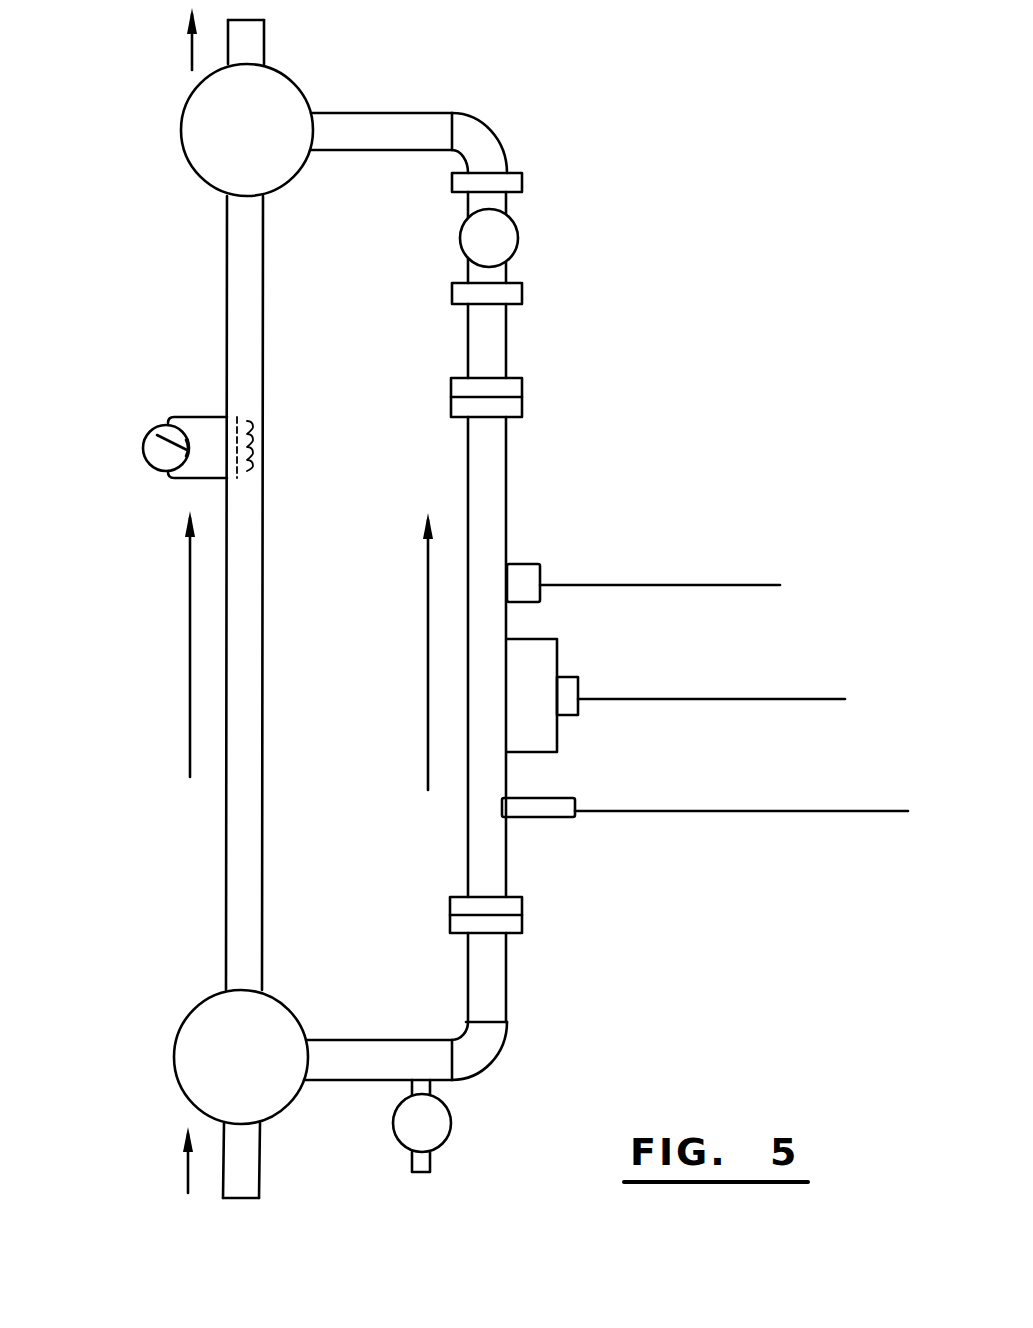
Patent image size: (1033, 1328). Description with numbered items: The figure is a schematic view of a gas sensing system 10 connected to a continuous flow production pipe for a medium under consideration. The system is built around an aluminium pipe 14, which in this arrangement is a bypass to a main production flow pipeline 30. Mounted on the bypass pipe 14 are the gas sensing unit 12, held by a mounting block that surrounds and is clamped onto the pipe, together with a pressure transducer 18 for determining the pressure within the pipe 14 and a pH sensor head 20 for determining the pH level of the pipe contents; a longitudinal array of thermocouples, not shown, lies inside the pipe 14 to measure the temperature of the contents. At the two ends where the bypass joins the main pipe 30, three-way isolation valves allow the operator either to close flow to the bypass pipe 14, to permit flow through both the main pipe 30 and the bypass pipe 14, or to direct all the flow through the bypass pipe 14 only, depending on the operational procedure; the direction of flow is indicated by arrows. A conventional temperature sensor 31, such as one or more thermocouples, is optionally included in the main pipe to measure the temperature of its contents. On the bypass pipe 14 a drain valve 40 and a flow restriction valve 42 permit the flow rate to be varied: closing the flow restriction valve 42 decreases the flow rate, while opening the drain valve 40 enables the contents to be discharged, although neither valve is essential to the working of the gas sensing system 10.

The gas sensing system 10 is at (602, 836).
The gas sensing unit 12 is at (552, 662).
The aluminium pipe 14 is at (503, 470).
The pressure transducer 18 is at (525, 575).
The pH sensor head 20 is at (553, 817).
The main production flow pipeline 30 is at (227, 925).
The temperature sensor 31 is at (158, 470).
The drain valve 40 is at (438, 1138).
The flow restriction valve 42 is at (510, 237).